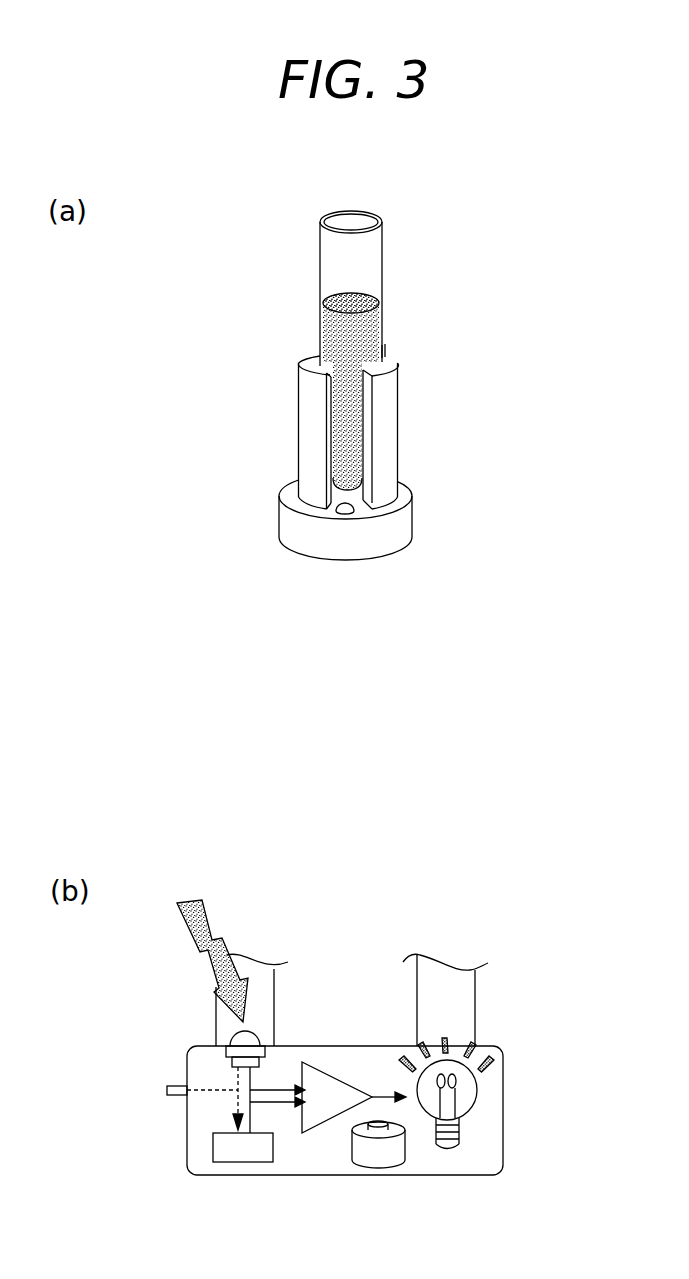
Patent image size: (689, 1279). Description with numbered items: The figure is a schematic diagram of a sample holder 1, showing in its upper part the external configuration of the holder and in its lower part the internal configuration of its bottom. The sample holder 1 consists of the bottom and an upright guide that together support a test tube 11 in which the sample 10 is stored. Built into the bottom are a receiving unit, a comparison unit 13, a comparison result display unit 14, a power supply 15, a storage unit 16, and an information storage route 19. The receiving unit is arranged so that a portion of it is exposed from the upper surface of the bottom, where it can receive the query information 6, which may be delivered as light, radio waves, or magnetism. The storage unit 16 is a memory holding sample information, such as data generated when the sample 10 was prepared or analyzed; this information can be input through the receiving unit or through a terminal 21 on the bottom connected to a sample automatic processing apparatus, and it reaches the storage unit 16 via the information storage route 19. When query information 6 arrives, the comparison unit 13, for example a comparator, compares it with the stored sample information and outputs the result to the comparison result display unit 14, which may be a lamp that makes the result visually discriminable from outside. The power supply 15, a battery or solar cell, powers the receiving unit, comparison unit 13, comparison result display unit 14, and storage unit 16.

The sample holder 1 is at (202, 418).
The query information 6 is at (207, 924).
The sample 10 is at (330, 330).
The test tube 11 is at (330, 268).
The comparison unit 13 is at (332, 1083).
The comparison result display unit 14 is at (478, 1090).
The power supply 15 is at (375, 1165).
The storage unit 16 is at (238, 1165).
The information storage route 19 is at (207, 1097).
The terminal 21 is at (170, 1086).